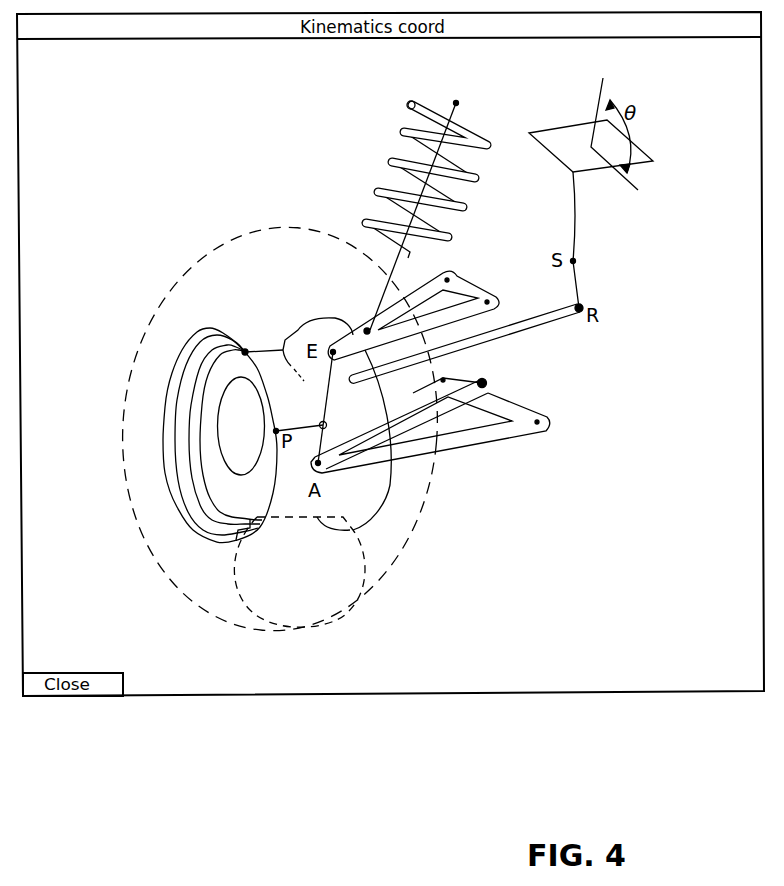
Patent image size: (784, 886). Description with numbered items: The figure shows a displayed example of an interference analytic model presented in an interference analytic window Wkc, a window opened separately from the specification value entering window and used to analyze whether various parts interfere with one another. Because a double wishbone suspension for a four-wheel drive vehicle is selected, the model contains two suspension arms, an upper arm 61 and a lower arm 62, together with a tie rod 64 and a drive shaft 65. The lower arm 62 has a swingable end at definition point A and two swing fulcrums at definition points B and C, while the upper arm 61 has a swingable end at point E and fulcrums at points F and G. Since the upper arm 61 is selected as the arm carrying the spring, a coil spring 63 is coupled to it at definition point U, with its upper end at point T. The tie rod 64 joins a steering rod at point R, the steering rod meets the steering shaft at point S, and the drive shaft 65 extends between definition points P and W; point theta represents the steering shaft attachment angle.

The upper arm 61 is at (477, 288).
The lower arm 62 is at (505, 432).
The coil spring 63 is at (392, 167).
The tie rod 64 is at (542, 323).
The drive shaft 65 is at (452, 393).
The interference analytic window Wkc is at (550, 693).